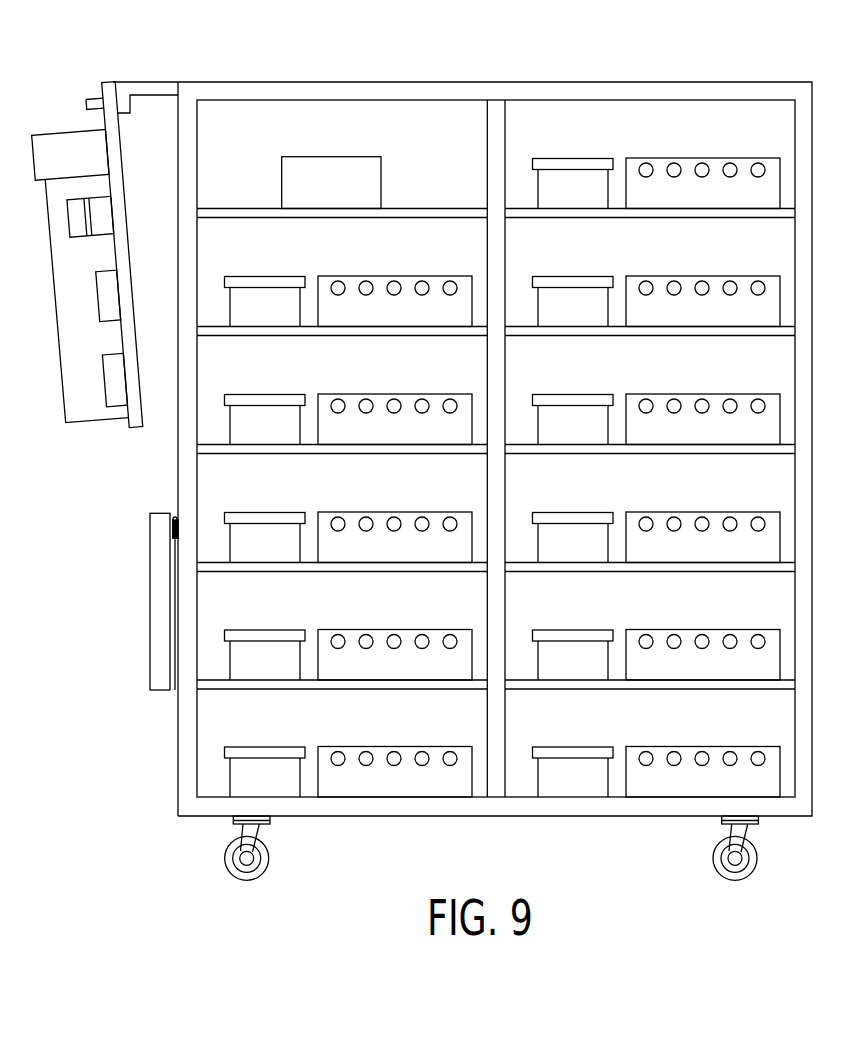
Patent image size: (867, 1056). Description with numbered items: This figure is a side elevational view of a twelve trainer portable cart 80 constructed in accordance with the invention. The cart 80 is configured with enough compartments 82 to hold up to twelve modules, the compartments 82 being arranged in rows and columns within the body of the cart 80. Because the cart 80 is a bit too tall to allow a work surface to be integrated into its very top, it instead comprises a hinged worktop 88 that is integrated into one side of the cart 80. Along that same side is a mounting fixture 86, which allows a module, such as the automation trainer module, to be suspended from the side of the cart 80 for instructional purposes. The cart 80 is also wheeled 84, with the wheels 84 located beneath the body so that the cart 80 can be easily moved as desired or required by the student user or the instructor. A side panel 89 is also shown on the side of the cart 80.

The cart 80 is at (626, 42).
The compartments 82 is at (335, 128).
The wheels 84 is at (247, 879).
The mounting fixture 86 is at (148, 88).
The hinged worktop 88 is at (178, 461).
The side panel 89 is at (150, 601).